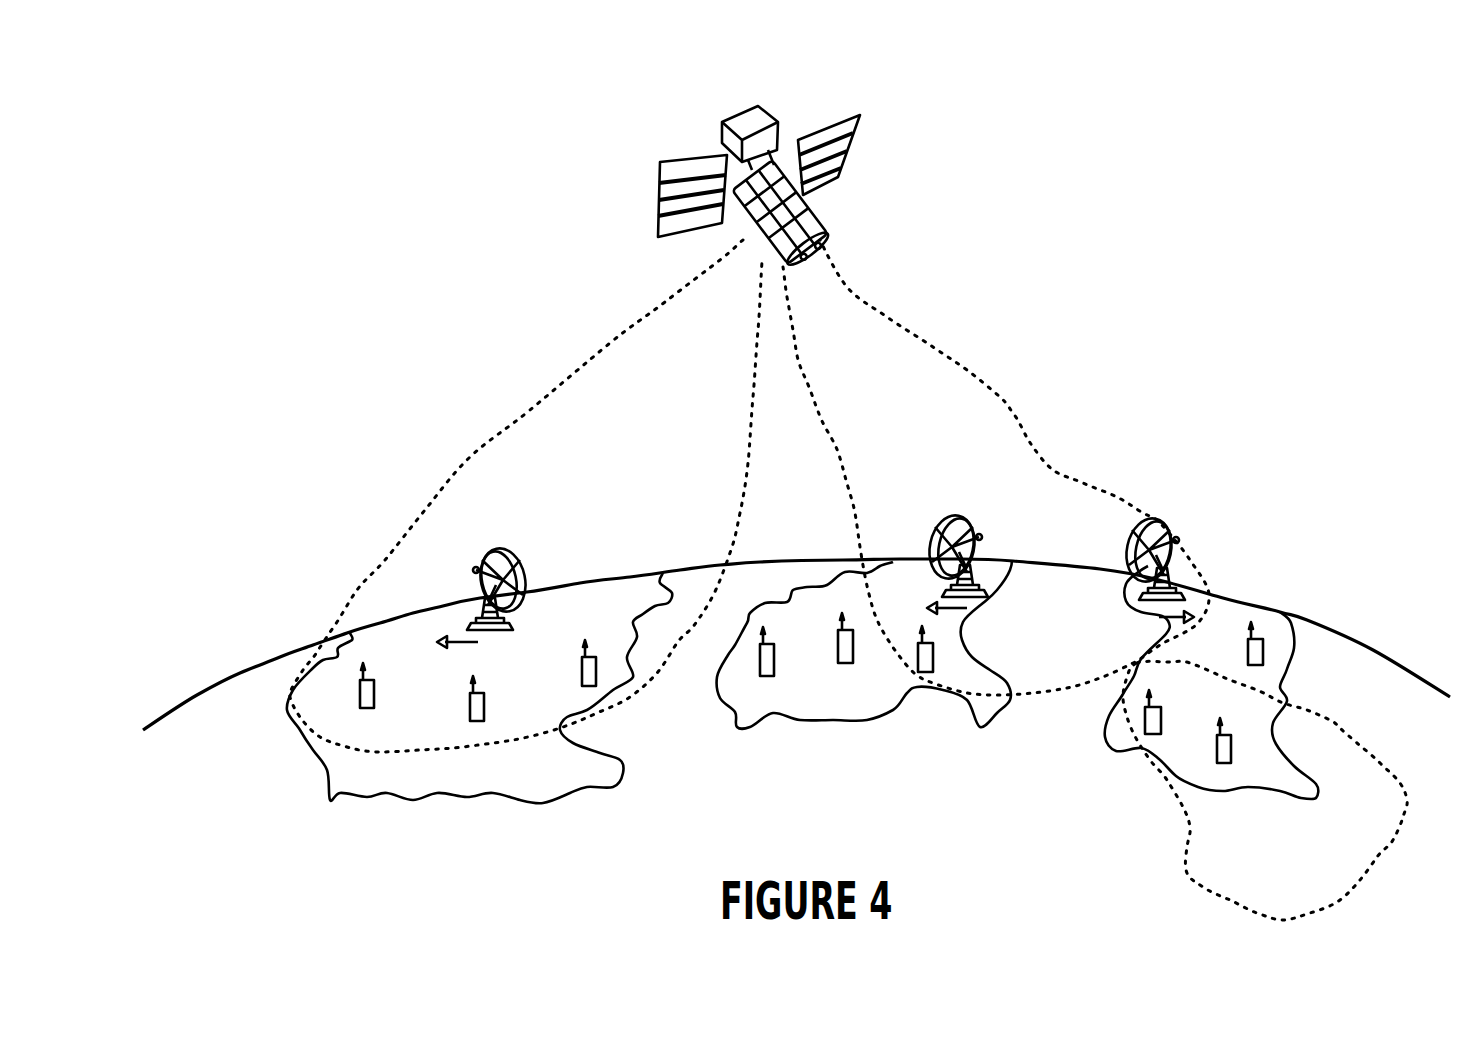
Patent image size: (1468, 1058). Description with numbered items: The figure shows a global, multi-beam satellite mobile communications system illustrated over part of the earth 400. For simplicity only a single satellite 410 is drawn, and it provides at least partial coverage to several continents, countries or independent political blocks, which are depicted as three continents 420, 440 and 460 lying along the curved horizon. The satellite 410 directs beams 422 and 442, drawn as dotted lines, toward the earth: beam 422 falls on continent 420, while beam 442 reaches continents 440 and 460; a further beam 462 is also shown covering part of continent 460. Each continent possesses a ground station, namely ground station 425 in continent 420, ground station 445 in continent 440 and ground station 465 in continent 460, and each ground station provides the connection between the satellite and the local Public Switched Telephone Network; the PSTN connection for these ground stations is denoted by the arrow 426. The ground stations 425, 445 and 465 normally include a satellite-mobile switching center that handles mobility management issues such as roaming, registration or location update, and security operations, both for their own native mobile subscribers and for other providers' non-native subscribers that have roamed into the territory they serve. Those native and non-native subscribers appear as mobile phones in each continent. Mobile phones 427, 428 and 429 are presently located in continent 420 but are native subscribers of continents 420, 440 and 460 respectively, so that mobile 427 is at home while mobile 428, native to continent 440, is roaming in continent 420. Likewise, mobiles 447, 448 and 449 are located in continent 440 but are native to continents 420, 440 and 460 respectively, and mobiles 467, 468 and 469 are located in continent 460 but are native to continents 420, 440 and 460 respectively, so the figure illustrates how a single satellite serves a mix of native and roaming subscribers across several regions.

The earth 400 is at (248, 667).
The satellite 410 is at (745, 110).
The continent 420 is at (523, 803).
The beam 422 is at (470, 452).
The ground station 425 is at (488, 550).
The connection to the PSTN 426 is at (505, 650).
The mobile phone 427 is at (357, 682).
The mobile phone 428 is at (468, 697).
The mobile phone 429 is at (580, 660).
The continent 440 is at (982, 722).
The beam 442 is at (1018, 403).
The ground station 445 is at (967, 513).
The mobile 447 is at (774, 650).
The mobile 448 is at (853, 637).
The mobile 449 is at (933, 647).
The continent 460 is at (1301, 801).
The beam 462 is at (1340, 727).
The ground station 465 is at (1166, 523).
The mobile 467 is at (1161, 709).
The mobile 468 is at (1231, 737).
The mobile 469 is at (1248, 644).